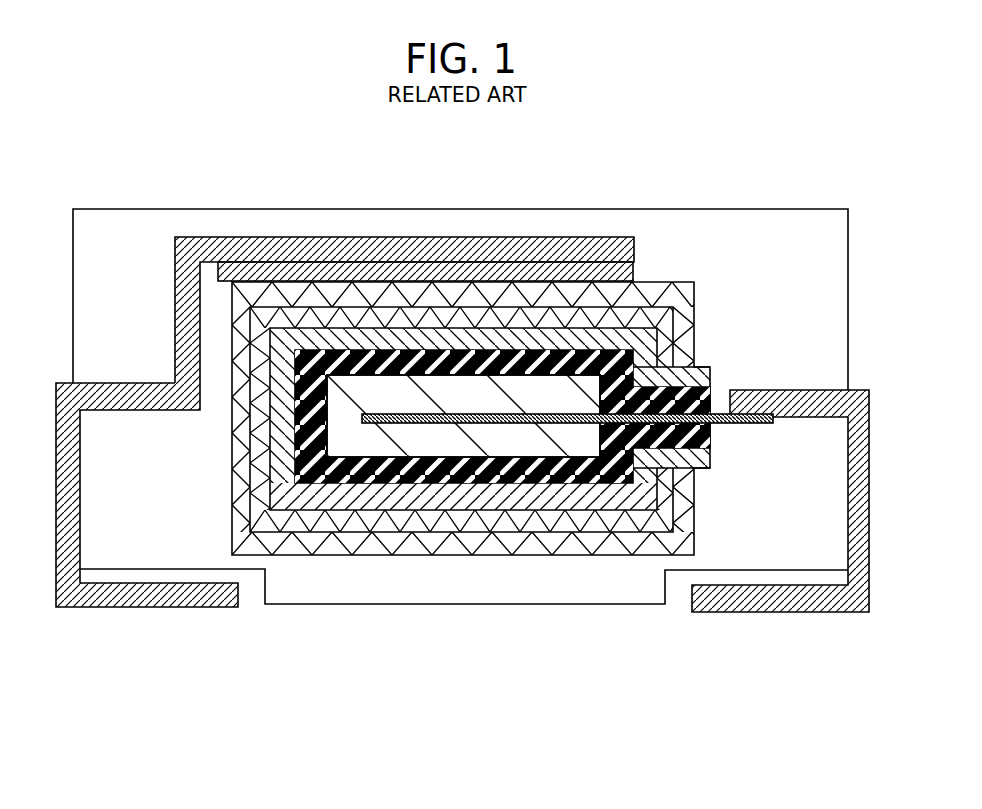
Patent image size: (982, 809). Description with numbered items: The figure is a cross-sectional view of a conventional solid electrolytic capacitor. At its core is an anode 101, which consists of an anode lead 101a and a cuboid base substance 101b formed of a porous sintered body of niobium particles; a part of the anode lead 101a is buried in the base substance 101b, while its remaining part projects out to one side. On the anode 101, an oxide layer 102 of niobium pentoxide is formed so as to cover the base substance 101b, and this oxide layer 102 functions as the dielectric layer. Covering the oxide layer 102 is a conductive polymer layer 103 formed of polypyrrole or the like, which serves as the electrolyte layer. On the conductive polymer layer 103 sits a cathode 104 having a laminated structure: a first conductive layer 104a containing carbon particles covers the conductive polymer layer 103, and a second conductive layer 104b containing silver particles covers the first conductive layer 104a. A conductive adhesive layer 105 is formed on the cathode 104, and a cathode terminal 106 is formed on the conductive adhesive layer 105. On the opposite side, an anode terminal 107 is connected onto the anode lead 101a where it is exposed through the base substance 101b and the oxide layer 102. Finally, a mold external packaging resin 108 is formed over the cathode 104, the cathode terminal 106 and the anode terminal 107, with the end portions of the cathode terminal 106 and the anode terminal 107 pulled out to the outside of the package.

The anode 101 is at (550, 533).
The anode lead 101a is at (733, 423).
The base substance 101b is at (586, 462).
The oxide layer 102 is at (303, 482).
The conductive polymer layer 103 is at (375, 507).
The cathode 104 is at (471, 486).
The first conductive layer 104a is at (537, 652).
The second conductive layer 104b is at (502, 540).
The conductive adhesive layer 105 is at (270, 268).
The cathode terminal 106 is at (195, 598).
The anode terminal 107 is at (782, 598).
The mold external packaging resin 108 is at (132, 253).